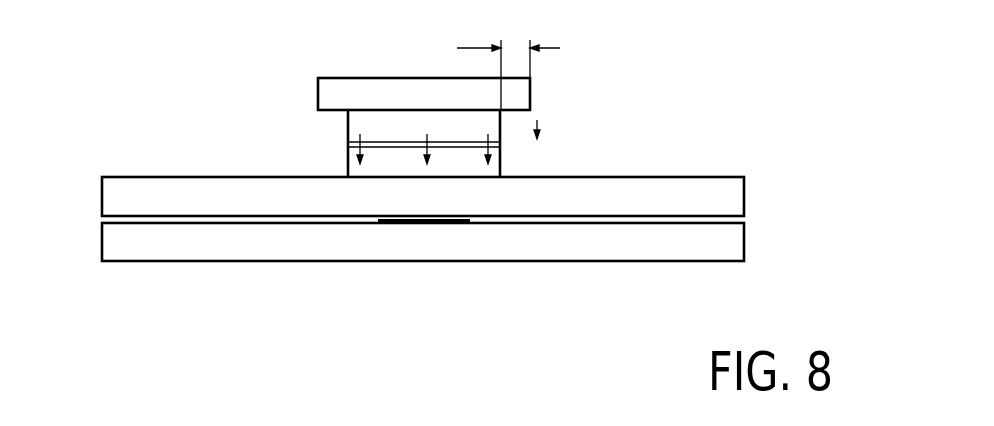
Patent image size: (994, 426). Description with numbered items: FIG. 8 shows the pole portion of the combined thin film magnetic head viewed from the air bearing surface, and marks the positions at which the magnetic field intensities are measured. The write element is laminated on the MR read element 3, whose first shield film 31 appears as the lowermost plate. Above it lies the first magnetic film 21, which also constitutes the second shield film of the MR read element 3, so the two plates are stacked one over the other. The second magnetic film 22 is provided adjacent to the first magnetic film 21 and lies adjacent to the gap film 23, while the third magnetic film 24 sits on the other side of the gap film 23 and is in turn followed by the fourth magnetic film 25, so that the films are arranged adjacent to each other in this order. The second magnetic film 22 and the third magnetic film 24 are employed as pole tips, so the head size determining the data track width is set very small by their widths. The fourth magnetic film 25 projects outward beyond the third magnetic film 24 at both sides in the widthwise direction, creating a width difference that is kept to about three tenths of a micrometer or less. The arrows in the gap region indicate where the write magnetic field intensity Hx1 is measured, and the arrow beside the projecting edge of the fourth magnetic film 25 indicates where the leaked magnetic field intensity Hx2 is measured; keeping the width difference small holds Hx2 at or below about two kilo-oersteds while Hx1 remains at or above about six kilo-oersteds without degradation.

The MR read element 3 is at (418, 233).
The first magnetic film 21 is at (675, 191).
The second magnetic film 22 is at (497, 162).
The gap film 23 is at (420, 143).
The third magnetic film 24 is at (378, 122).
The fourth magnetic film 25 is at (318, 92).
The first shield film 31 is at (675, 262).
The write magnetic field intensity Hx1 is at (356, 144).
The leaked magnetic field intensity Hx2 is at (537, 121).